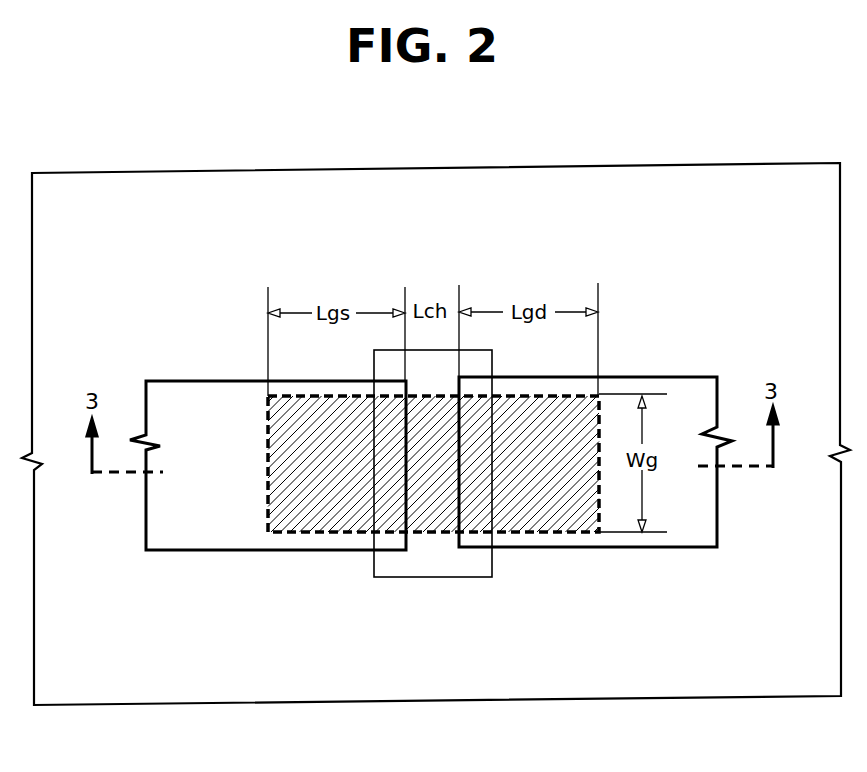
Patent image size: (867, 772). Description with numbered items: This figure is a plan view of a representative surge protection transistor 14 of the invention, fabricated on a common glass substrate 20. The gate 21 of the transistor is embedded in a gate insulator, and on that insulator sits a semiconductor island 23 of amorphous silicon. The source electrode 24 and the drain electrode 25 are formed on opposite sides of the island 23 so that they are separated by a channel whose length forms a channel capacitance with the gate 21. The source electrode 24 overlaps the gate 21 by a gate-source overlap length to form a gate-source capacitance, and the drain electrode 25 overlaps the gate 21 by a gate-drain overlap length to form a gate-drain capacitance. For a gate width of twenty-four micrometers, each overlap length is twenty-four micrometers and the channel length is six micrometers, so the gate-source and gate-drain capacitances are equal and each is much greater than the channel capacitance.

The glass substrate 20 is at (408, 172).
The surge protection transistor 14 is at (440, 240).
The gate 21 is at (307, 522).
The semiconductor island 23 is at (428, 573).
The source electrode 24 is at (212, 545).
The drain electrode 25 is at (638, 540).